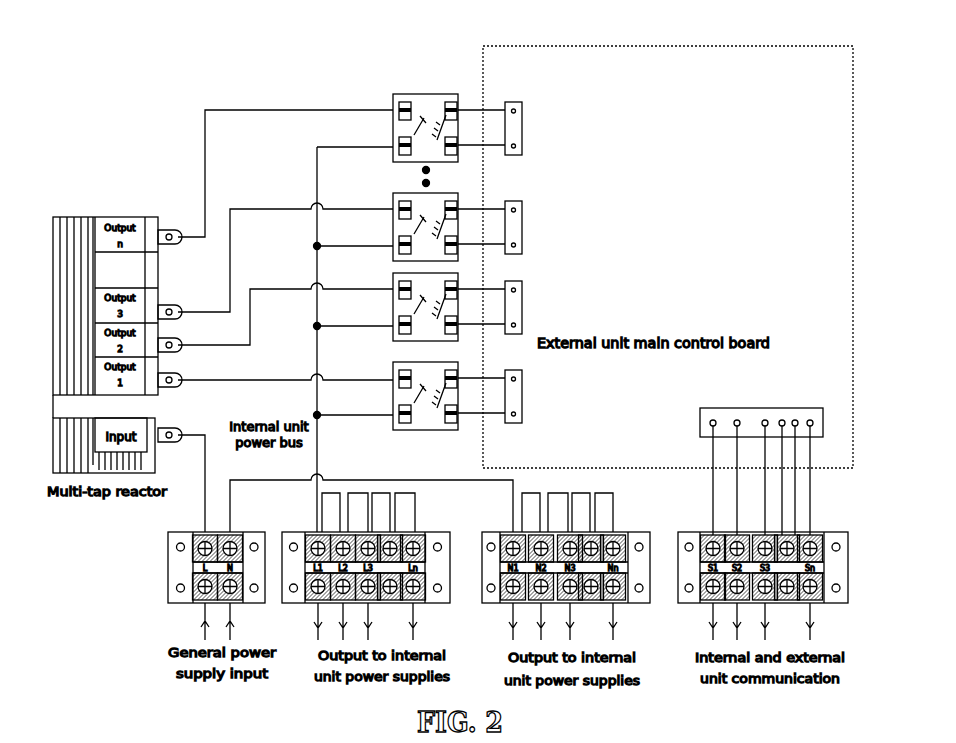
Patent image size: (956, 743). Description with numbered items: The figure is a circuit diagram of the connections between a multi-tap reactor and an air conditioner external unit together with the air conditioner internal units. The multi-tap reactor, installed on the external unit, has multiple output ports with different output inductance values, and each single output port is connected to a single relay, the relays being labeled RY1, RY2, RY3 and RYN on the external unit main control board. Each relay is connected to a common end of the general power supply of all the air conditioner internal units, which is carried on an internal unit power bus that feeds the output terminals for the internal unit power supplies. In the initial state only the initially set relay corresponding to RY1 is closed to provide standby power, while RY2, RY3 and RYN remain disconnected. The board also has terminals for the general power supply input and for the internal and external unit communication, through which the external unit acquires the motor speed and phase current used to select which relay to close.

The relay 1 connector RY1 is at (432, 400).
The relay 2 connector RY2 is at (432, 311).
The relay 3 connector RY3 is at (432, 231).
The relay n connector RYN is at (433, 132).